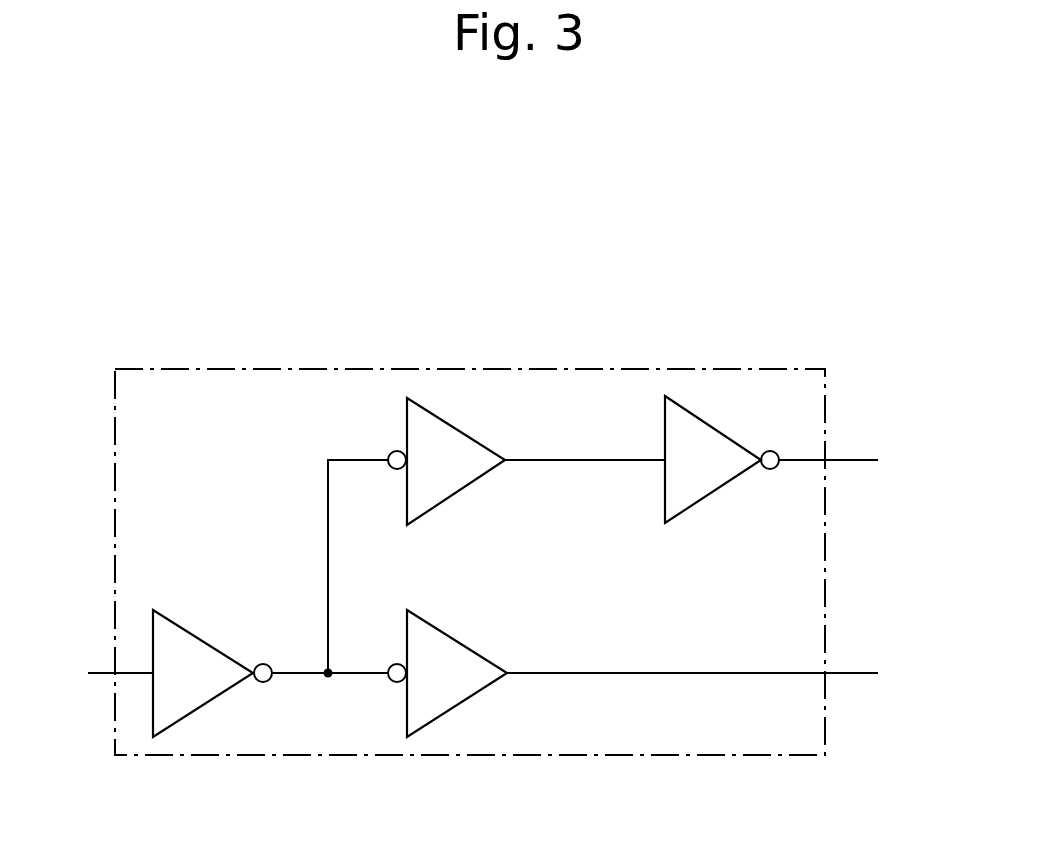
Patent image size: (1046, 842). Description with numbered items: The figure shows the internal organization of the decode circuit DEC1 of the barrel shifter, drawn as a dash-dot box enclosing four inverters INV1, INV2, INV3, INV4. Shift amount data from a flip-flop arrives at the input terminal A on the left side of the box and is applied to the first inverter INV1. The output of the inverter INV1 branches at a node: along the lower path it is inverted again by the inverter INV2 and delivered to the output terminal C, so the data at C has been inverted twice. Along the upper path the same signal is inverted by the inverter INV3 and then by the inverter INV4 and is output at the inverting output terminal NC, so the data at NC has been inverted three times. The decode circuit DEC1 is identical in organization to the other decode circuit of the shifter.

The decode circuit DEC1 is at (556, 368).
The inverter INV1 is at (212, 673).
The inverter INV2 is at (447, 673).
The inverter INV3 is at (446, 461).
The inverter INV4 is at (722, 459).
The input terminal A is at (99, 670).
The output terminal C is at (716, 677).
The inverting output terminal NC is at (857, 459).